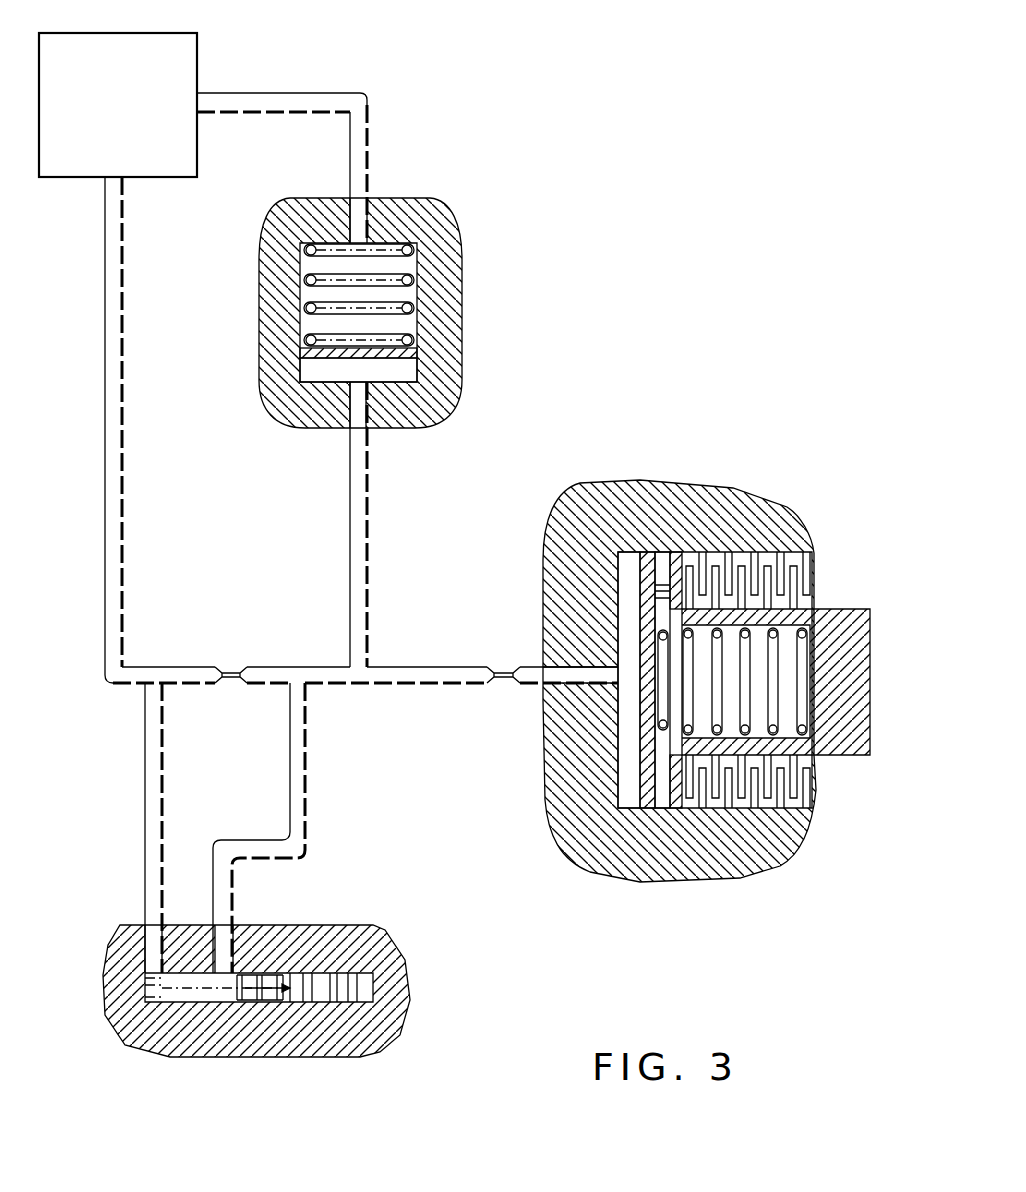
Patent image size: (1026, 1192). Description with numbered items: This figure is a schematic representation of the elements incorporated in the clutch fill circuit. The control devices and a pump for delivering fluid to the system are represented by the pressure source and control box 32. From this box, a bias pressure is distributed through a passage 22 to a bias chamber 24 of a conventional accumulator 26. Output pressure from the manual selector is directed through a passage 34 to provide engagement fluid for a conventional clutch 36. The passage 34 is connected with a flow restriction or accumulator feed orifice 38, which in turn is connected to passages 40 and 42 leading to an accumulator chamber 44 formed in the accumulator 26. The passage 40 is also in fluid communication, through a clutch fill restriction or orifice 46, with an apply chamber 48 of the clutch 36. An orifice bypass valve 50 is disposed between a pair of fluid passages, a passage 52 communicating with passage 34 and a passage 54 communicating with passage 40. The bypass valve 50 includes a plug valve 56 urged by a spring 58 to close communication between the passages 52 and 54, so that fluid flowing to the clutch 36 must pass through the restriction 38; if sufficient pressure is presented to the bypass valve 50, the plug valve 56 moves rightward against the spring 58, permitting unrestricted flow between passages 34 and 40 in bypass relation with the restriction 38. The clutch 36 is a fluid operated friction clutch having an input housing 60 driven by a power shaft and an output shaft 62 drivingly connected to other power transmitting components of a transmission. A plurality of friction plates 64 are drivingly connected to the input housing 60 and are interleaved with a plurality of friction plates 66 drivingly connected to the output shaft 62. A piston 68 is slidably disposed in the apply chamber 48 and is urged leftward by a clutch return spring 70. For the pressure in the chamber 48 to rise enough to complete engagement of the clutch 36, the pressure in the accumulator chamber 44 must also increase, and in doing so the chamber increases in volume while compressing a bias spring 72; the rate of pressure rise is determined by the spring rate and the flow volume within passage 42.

The passage 22 is at (360, 172).
The bias chamber 24 is at (400, 263).
The accumulator 26 is at (409, 313).
The pressure source and control box 32 is at (190, 75).
The passage 34 is at (113, 452).
The clutch 36 is at (712, 672).
The accumulator feed orifice 38 is at (232, 667).
The passage 40 is at (430, 683).
The passage 42 is at (352, 535).
The accumulator chamber 44 is at (400, 370).
The clutch fill orifice 46 is at (497, 668).
The apply chamber 48 is at (636, 750).
The orifice bypass valve 50 is at (256, 1008).
The fluid passage 52 is at (152, 790).
The fluid passage 54 is at (297, 777).
The plug valve 56 is at (193, 978).
The spring 58 is at (338, 975).
The input housing 60 is at (683, 500).
The output shaft 62 is at (781, 656).
The friction plates 64 is at (712, 560).
The friction plates 66 is at (775, 795).
The piston 68 is at (660, 770).
The clutch return spring 70 is at (800, 750).
The bias spring 72 is at (400, 303).